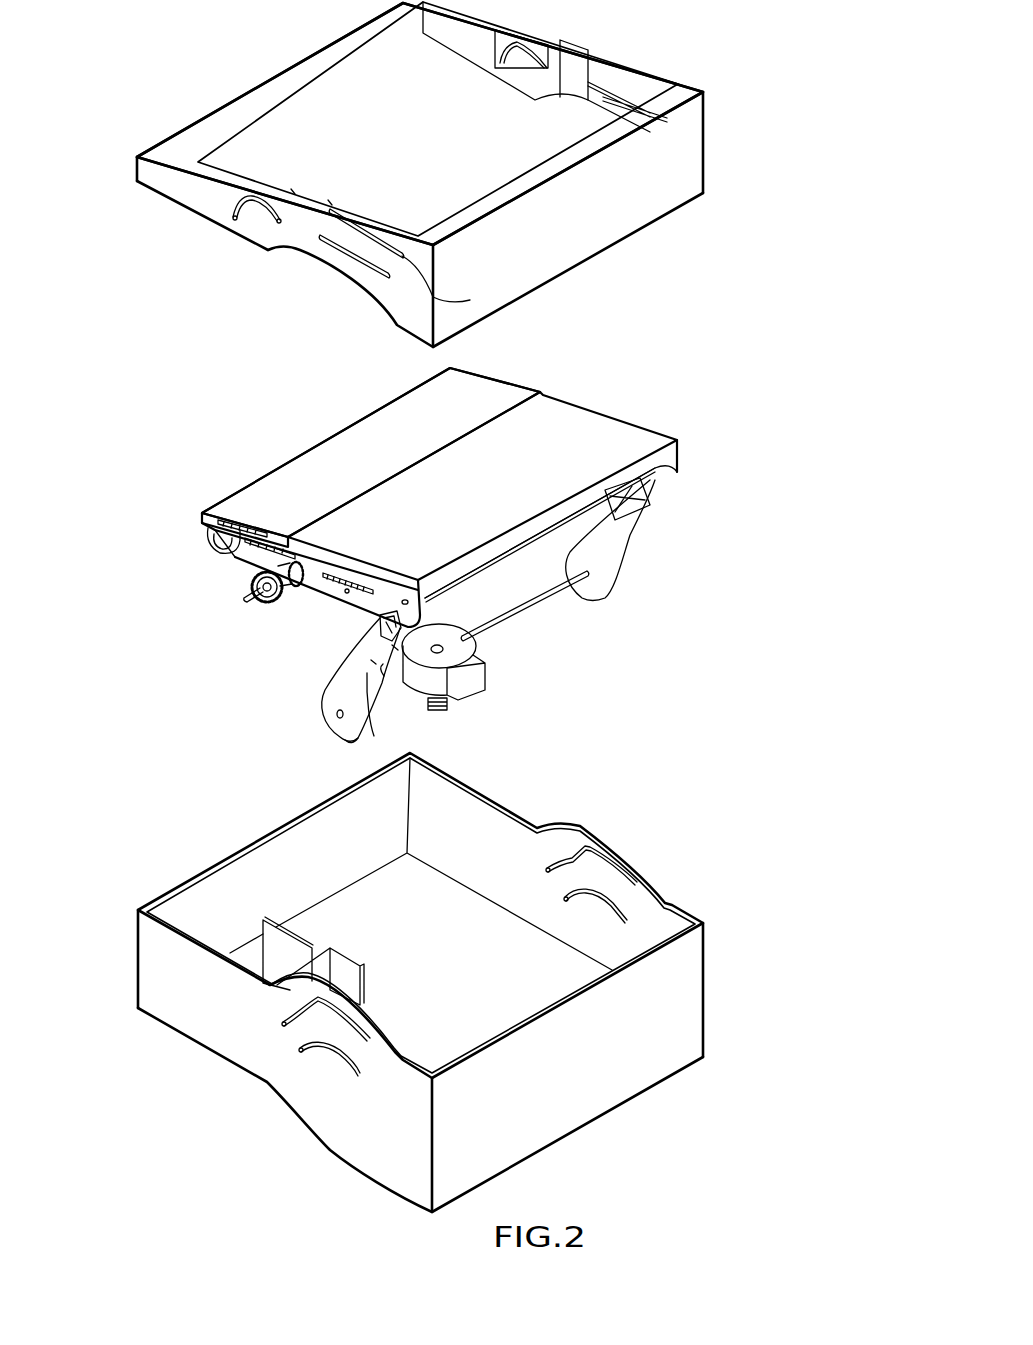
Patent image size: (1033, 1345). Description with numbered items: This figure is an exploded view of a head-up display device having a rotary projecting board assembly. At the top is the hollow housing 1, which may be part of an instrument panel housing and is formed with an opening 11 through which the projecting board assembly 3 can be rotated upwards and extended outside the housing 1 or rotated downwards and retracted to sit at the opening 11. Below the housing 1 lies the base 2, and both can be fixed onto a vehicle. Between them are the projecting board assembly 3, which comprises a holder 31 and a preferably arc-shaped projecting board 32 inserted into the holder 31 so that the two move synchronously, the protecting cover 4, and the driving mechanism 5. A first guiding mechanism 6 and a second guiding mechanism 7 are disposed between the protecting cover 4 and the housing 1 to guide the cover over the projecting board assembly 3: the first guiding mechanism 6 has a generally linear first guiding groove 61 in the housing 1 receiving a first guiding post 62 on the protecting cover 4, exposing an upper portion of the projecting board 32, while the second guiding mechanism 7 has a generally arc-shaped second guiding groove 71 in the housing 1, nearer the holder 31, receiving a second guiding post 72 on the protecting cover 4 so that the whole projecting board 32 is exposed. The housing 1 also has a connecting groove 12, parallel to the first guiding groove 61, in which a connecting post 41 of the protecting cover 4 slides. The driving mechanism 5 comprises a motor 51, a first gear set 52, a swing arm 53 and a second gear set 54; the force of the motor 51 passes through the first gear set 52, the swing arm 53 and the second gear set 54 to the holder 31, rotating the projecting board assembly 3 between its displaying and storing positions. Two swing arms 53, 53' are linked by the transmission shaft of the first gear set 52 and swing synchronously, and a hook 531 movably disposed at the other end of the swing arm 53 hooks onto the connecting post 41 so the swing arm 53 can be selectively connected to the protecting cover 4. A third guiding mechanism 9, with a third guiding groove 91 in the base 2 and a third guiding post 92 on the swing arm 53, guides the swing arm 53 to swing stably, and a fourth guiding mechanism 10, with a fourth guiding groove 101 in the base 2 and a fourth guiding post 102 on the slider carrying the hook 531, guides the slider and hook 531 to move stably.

The housing 1 is at (461, 174).
The opening 11 is at (322, 105).
The connecting groove 12 is at (358, 257).
The base 2 is at (712, 988).
The projecting board assembly 3 is at (291, 451).
The holder 31 is at (282, 490).
The projecting board 32 is at (464, 577).
The protecting cover 4 is at (454, 503).
The connecting post 41 is at (367, 618).
The driving mechanism 5 is at (311, 662).
The motor 51 is at (470, 680).
The first gear set 52 is at (436, 705).
The swing arm 53 is at (330, 679).
The swing arm 53' is at (627, 542).
The hook 531 is at (468, 636).
The second gear set 54 is at (272, 598).
The first guiding mechanism 6 is at (574, 290).
The first guiding groove 61 is at (402, 252).
The first guiding post 62 is at (406, 599).
The second guiding mechanism 7 is at (240, 273).
The second guiding groove 71 is at (258, 212).
The second guiding post 72 is at (338, 570).
The third guiding mechanism 9 is at (262, 722).
The third guiding groove 91 is at (317, 1040).
The third guiding post 92 is at (358, 729).
The fourth guiding mechanism 10 is at (470, 820).
The fourth guiding groove 101 is at (362, 1000).
The fourth guiding post 102 is at (381, 673).